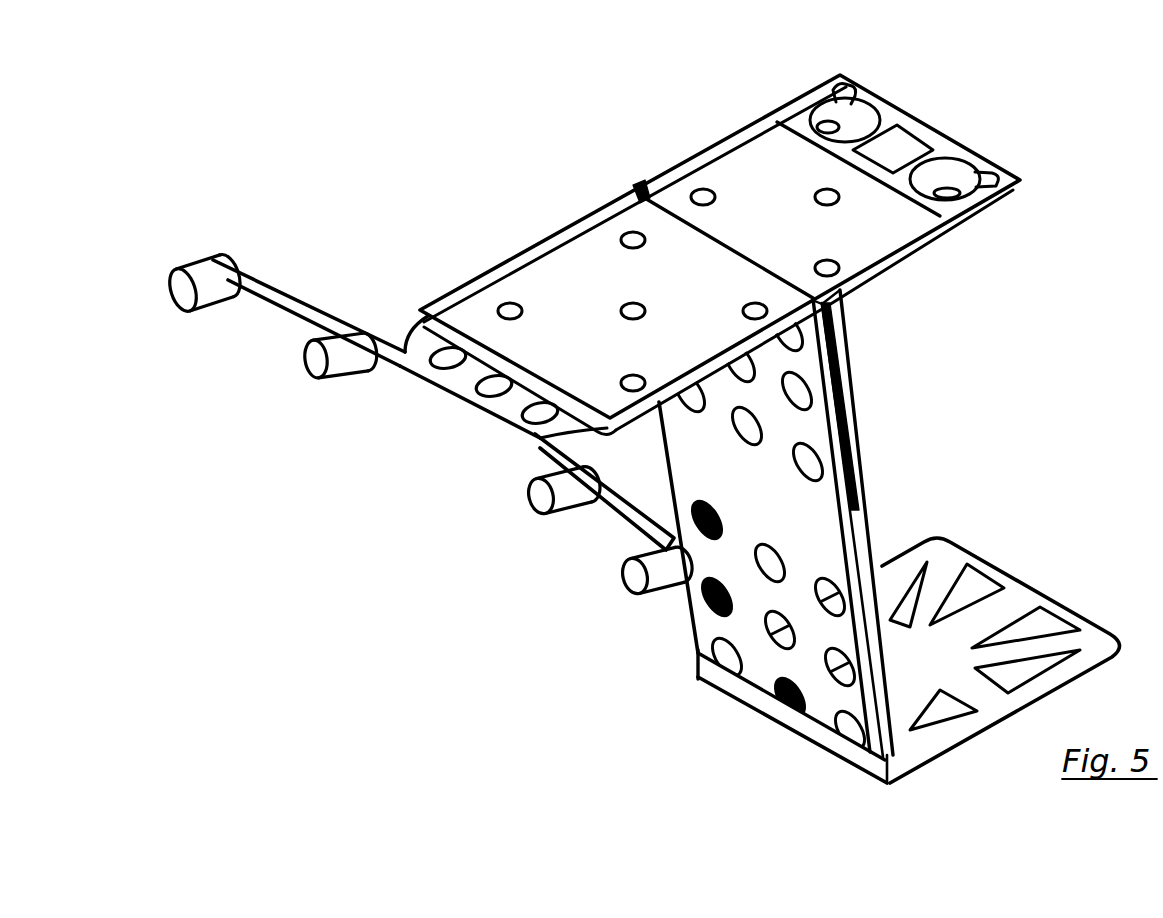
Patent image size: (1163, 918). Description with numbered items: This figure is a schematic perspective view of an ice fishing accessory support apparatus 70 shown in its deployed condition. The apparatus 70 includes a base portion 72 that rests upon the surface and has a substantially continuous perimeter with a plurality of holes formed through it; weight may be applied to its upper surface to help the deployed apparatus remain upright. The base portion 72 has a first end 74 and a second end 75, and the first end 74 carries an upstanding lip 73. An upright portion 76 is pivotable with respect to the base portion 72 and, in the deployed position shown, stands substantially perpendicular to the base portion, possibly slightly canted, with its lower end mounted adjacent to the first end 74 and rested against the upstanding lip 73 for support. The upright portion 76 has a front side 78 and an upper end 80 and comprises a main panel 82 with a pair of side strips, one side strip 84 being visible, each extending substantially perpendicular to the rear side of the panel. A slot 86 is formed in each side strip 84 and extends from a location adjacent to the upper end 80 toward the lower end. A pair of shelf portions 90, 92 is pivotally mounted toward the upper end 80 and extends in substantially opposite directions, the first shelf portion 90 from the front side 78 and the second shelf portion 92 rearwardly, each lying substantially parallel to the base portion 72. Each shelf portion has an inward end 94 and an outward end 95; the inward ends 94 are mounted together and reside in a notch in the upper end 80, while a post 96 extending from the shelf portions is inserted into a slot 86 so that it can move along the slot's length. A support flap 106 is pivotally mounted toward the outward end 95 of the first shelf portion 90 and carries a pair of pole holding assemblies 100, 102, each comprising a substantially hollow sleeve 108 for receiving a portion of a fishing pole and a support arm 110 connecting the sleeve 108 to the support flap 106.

The ice fishing accessory support apparatus 70 is at (1025, 100).
The base portion 72 is at (1062, 690).
The upstanding lip 73 is at (770, 706).
The first end 74 is at (815, 745).
The second end 75 is at (1040, 590).
The upright portion 76 is at (882, 515).
The front side 78 is at (710, 623).
The upper end 80 is at (843, 300).
The main panel 82 is at (708, 679).
The side strip 84 is at (862, 553).
The slot 86 is at (855, 416).
The first shelf portion 90 is at (555, 275).
The second shelf portion 92 is at (745, 167).
The inward end 94 is at (760, 270).
The outward end 95 is at (975, 160).
The post 96 is at (850, 292).
The pole holding assembly 100 is at (577, 559).
The pole holding assembly 102 is at (266, 360).
The support flap 106 is at (458, 380).
The sleeve 108 is at (340, 376).
The support arm 110 is at (285, 284).